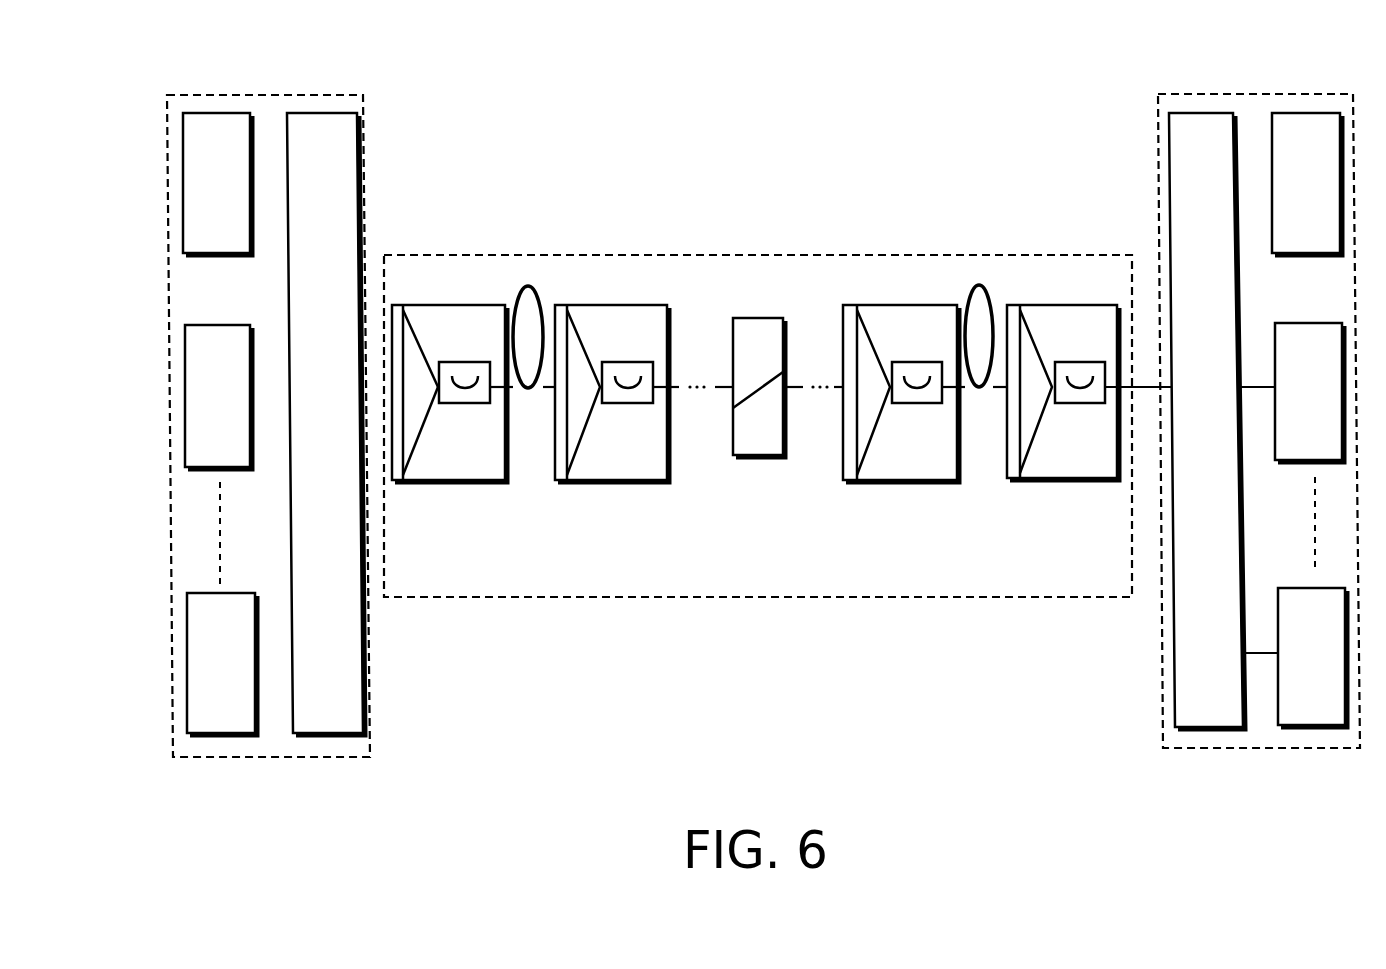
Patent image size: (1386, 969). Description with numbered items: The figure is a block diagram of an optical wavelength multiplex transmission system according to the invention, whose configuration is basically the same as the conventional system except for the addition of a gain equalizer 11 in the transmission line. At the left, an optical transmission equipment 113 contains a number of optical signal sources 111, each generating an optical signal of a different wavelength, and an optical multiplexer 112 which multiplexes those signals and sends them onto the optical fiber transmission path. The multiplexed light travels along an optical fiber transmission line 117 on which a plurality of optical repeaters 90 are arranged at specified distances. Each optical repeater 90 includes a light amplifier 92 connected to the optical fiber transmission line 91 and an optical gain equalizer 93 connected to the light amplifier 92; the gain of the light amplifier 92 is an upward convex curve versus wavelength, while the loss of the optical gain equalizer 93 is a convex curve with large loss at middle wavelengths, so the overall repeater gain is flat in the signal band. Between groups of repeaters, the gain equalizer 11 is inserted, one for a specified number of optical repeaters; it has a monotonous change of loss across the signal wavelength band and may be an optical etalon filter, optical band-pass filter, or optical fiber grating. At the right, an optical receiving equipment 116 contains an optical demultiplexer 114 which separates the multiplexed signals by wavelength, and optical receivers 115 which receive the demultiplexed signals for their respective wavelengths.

The gain equalizer 11 is at (757, 458).
The optical repeater 90 is at (452, 404).
The optical fiber transmission line 91 is at (544, 289).
The light amplifier 92 is at (420, 438).
The optical gain equalizer 93 is at (462, 362).
The optical signal source 111 is at (208, 257).
The optical multiplexer 112 is at (322, 737).
The optical transmission equipment 113 is at (372, 676).
The optical demultiplexer 114 is at (1207, 731).
The optical receiver 115 is at (1298, 112).
The optical receiving equipment 116 is at (1160, 677).
The optical fiber transmission line 117 is at (735, 599).